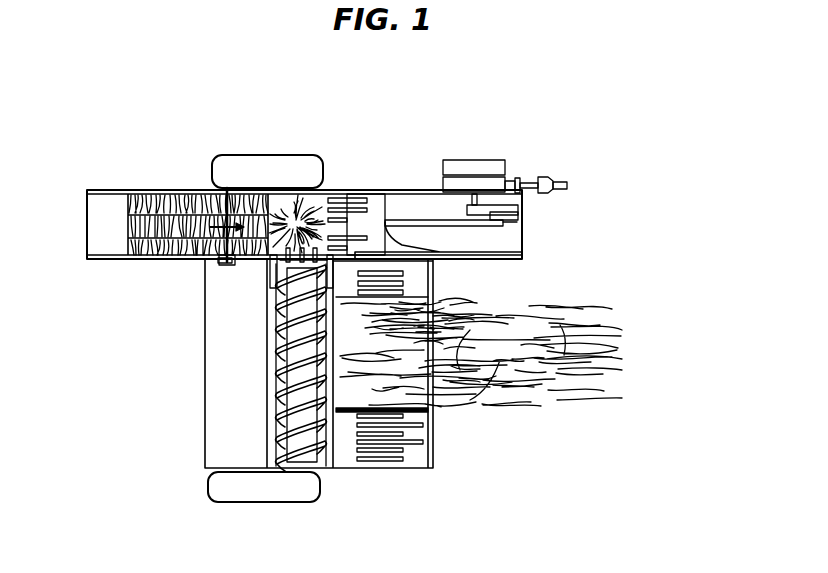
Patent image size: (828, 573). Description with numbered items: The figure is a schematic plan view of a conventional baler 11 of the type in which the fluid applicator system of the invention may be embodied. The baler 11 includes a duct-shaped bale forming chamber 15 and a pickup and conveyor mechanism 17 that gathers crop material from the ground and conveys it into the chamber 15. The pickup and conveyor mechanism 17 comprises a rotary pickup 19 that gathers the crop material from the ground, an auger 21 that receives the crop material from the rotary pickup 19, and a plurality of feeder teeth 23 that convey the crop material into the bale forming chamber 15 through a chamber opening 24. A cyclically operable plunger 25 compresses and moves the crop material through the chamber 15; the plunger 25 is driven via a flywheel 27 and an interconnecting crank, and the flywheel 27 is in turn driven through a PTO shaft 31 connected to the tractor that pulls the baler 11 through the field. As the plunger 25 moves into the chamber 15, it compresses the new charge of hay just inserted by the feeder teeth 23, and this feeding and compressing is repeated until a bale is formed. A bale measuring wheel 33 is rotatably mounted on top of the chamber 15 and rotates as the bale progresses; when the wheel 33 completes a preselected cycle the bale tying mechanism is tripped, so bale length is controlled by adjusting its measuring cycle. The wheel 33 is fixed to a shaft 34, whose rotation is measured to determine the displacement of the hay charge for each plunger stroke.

The baler 11 is at (329, 118).
The bale forming chamber 15 is at (108, 190).
The pickup and conveyor mechanism 17 is at (250, 369).
The rotary pickup 19 is at (374, 468).
The auger 21 is at (283, 420).
The feeder teeth 23 is at (268, 262).
The chamber opening 24 is at (313, 258).
The plunger 25 is at (363, 186).
The flywheel 27 is at (481, 160).
The PTO shaft 31 is at (560, 182).
The bale measuring wheel 33 is at (213, 227).
The shaft 34 is at (221, 253).